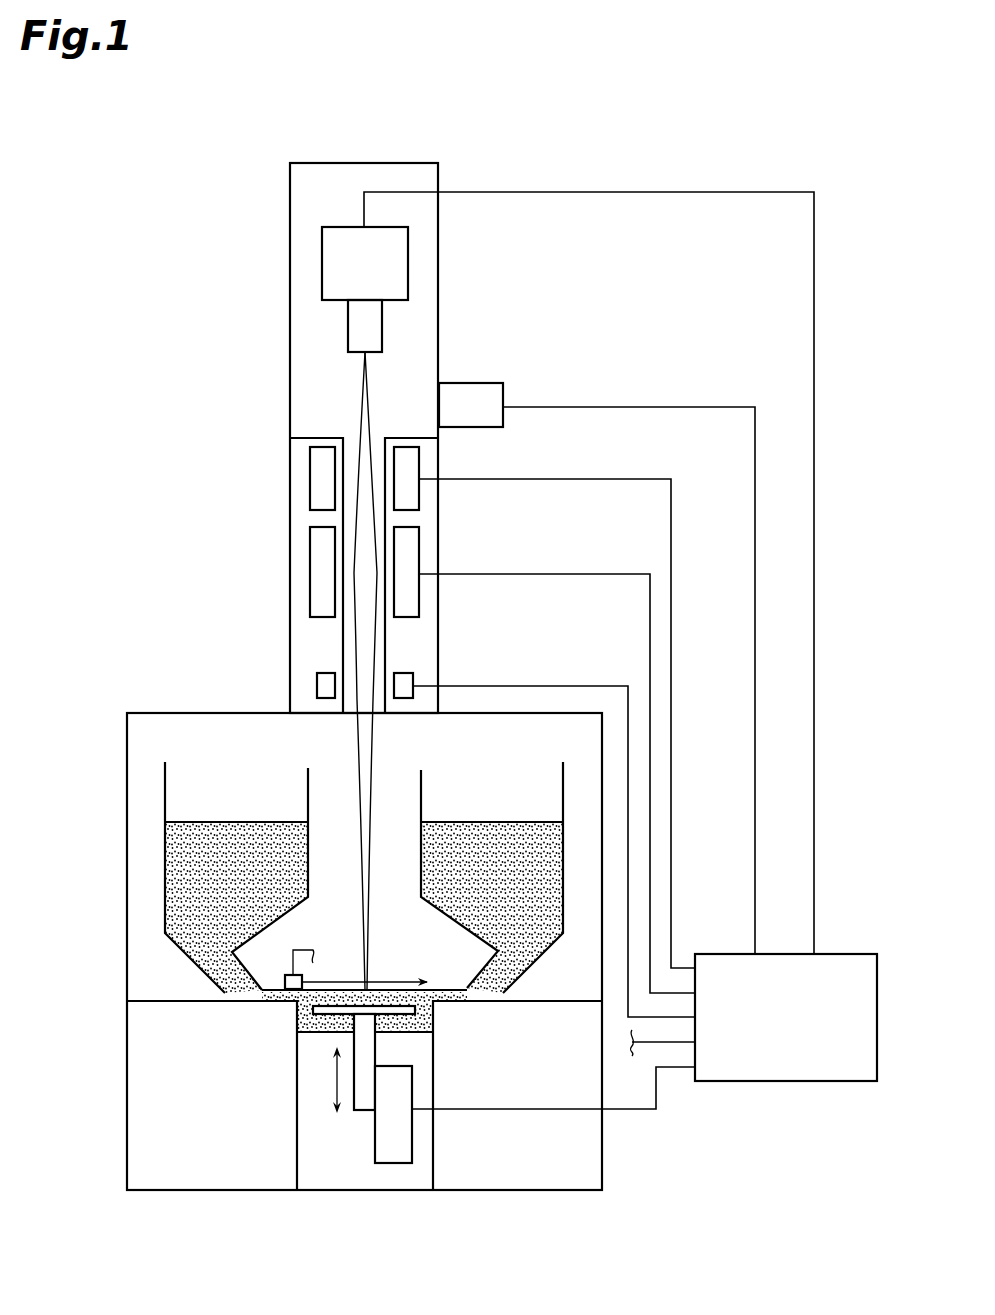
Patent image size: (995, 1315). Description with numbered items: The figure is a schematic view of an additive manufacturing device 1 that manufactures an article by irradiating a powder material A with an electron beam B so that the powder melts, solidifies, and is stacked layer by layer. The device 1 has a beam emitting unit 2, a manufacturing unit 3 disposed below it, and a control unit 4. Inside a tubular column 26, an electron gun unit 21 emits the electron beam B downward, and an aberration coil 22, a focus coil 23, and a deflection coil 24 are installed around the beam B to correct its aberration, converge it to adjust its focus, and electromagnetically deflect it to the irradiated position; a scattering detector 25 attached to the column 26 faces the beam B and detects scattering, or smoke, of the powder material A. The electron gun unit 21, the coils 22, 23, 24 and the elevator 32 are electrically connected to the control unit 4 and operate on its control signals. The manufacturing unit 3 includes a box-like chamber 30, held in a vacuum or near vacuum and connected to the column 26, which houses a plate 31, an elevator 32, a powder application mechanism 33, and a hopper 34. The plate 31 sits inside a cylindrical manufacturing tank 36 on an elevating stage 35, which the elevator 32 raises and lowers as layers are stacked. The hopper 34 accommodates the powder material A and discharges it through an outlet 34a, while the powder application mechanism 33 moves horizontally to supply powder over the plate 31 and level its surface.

The additive manufacturing device 1 is at (653, 120).
The beam emitting unit 2 is at (290, 168).
The manufacturing unit 3 is at (127, 733).
The control unit 4 is at (840, 954).
The electron gun unit 21 is at (322, 256).
The aberration coil 22 is at (419, 460).
The focus coil 23 is at (419, 538).
The deflection coil 24 is at (413, 675).
The scattering detector 25 is at (468, 383).
The column 26 is at (290, 210).
The chamber 30 is at (127, 860).
The plate 31 is at (313, 1010).
The elevator 32 is at (412, 1133).
The powder application mechanism 33 is at (236, 990).
The hopper 34 is at (165, 790).
The outlet 34a is at (296, 1002).
The elevating stage 35 is at (307, 1033).
The manufacturing tank 36 is at (435, 1062).
The powder material A is at (428, 1005).
The electron beam B is at (356, 748).